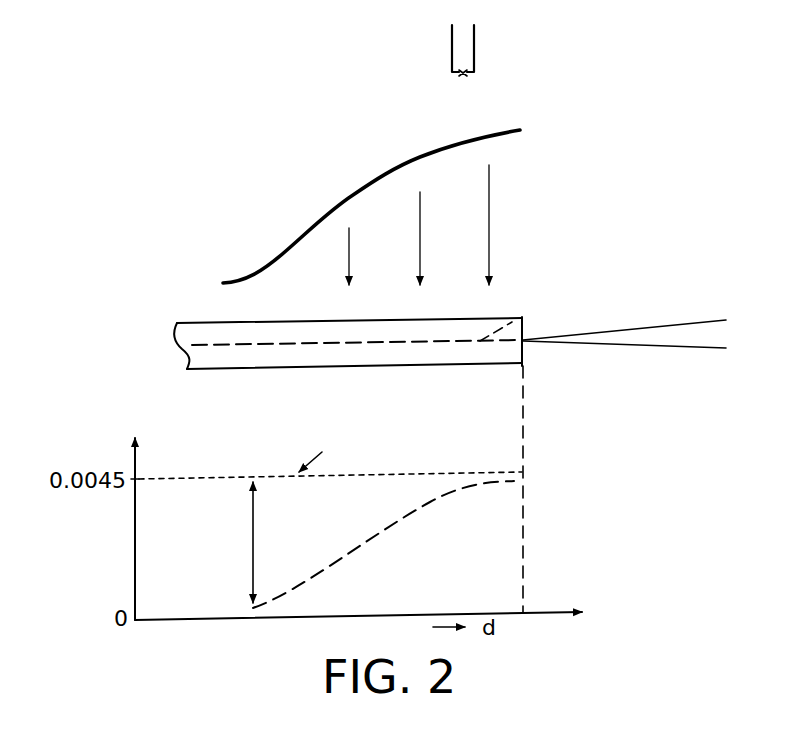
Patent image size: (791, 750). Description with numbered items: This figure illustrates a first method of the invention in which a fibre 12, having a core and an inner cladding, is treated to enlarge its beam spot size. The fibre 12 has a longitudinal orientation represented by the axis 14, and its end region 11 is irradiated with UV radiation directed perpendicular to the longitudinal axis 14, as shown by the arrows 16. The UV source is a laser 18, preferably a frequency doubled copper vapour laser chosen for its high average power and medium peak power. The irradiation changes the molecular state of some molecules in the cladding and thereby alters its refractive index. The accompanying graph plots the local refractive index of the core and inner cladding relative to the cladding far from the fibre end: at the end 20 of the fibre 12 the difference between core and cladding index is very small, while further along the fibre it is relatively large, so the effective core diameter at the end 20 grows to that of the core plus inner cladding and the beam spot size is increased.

The end region 11 is at (455, 368).
The fibre 12 is at (176, 338).
The longitudinal axis 14 is at (528, 314).
The arrows 16 is at (352, 262).
The laser 18 is at (477, 48).
The end 20 is at (536, 353).